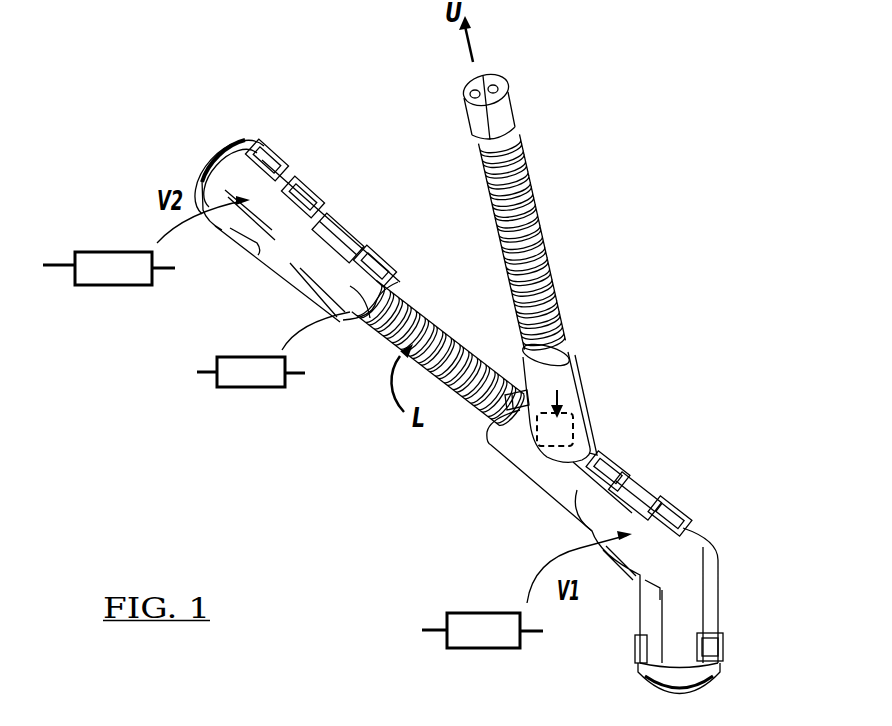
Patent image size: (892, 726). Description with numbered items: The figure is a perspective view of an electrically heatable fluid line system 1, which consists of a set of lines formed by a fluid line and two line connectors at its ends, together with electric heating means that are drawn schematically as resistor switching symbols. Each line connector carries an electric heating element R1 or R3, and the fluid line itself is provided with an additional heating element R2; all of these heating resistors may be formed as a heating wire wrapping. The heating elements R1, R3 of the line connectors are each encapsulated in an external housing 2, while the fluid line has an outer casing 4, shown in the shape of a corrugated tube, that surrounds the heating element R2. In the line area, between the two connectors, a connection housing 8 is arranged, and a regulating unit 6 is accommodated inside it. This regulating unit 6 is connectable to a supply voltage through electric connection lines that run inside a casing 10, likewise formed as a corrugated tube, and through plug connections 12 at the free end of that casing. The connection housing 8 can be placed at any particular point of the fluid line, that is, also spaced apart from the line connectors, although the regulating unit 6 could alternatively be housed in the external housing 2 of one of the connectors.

The fluid line system 1 is at (418, 490).
The external housing 2 is at (292, 256).
The outer casing 4 is at (412, 320).
The regulating unit 6 is at (570, 352).
The connection housing 8 is at (530, 443).
The casing 10 is at (530, 222).
The plug connections 12 is at (493, 73).
The electric heating element R1 is at (482, 650).
The additional heating element R2 is at (273, 373).
The electric heating element R3 is at (109, 290).